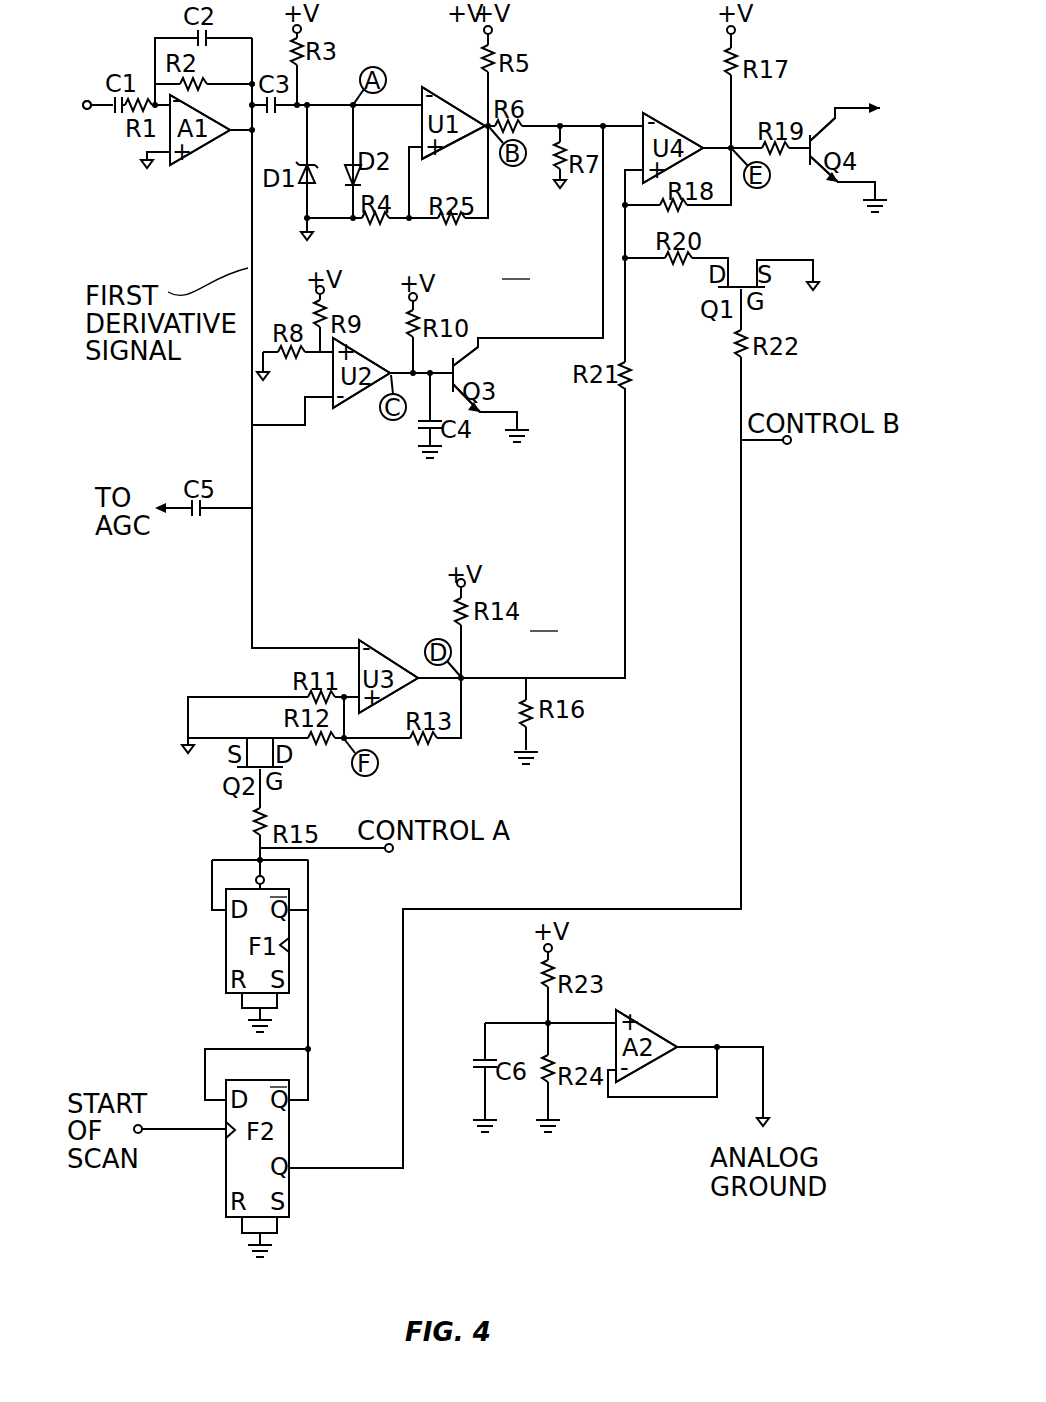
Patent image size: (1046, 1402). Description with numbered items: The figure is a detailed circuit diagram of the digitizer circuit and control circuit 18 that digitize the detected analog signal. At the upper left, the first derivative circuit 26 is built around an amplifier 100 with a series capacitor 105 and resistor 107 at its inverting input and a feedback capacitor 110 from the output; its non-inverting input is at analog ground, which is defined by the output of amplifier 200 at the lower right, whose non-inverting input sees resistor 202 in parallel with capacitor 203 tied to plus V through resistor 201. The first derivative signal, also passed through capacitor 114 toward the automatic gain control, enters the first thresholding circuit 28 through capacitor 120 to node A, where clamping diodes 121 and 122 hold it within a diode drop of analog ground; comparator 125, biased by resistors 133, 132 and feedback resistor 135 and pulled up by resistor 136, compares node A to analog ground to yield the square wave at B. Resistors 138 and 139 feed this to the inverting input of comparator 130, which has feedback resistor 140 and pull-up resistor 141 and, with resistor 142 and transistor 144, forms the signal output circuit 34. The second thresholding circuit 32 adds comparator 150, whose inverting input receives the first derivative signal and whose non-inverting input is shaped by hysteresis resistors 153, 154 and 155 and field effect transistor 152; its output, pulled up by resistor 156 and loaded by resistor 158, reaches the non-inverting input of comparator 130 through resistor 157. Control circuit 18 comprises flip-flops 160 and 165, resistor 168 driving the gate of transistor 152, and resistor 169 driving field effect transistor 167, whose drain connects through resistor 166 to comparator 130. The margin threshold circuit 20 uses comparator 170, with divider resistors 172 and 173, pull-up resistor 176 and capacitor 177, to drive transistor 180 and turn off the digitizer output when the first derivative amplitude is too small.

The first derivative circuit 26 is at (133, 159).
The amplifier 100 is at (190, 158).
The capacitor 105 is at (118, 116).
The resistor 107 is at (150, 94).
The capacitor 110 is at (212, 34).
The resistor 142 is at (198, 80).
The capacitor 120 is at (272, 116).
The clamping diode 121 is at (302, 198).
The clamping diode 122 is at (340, 163).
The resistor 133 is at (304, 46).
The resistor 132 is at (378, 228).
The resistor 135 is at (455, 228).
The comparator 125 is at (425, 95).
The resistor 136 is at (486, 54).
The resistor 138 is at (518, 118).
The resistor 139 is at (553, 165).
The first thresholding circuit 28 is at (518, 266).
The comparator 130 is at (645, 116).
The resistor 141 is at (728, 62).
The resistor 140 is at (700, 212).
The transistor 144 is at (837, 143).
The signal output circuit 34 is at (826, 90).
The resistor 166 is at (690, 264).
The field effect transistor 167 is at (770, 296).
The resistor 169 is at (730, 350).
The resistor 157 is at (610, 392).
The resistor 173 is at (318, 310).
The resistor 176 is at (410, 318).
The resistor 172 is at (288, 362).
The comparator 170 is at (338, 410).
The margin threshold circuit 20 is at (366, 430).
The capacitor 177 is at (410, 430).
The transistor 180 is at (485, 400).
The capacitor 114 is at (205, 520).
The comparator 150 is at (360, 645).
The resistor 153 is at (303, 692).
The resistor 154 is at (320, 750).
The resistor 155 is at (430, 750).
The resistor 156 is at (458, 610).
The resistor 158 is at (530, 730).
The second thresholding circuit 32 is at (546, 618).
The field effect transistor 152 is at (222, 785).
The resistor 168 is at (256, 830).
The flip-flop 160 is at (225, 946).
The control circuit 18 is at (335, 952).
The flip-flop 165 is at (290, 1135).
The resistor 201 is at (540, 975).
The resistor 202 is at (555, 1083).
The capacitor 203 is at (476, 1065).
The amplifier 200 is at (652, 1036).